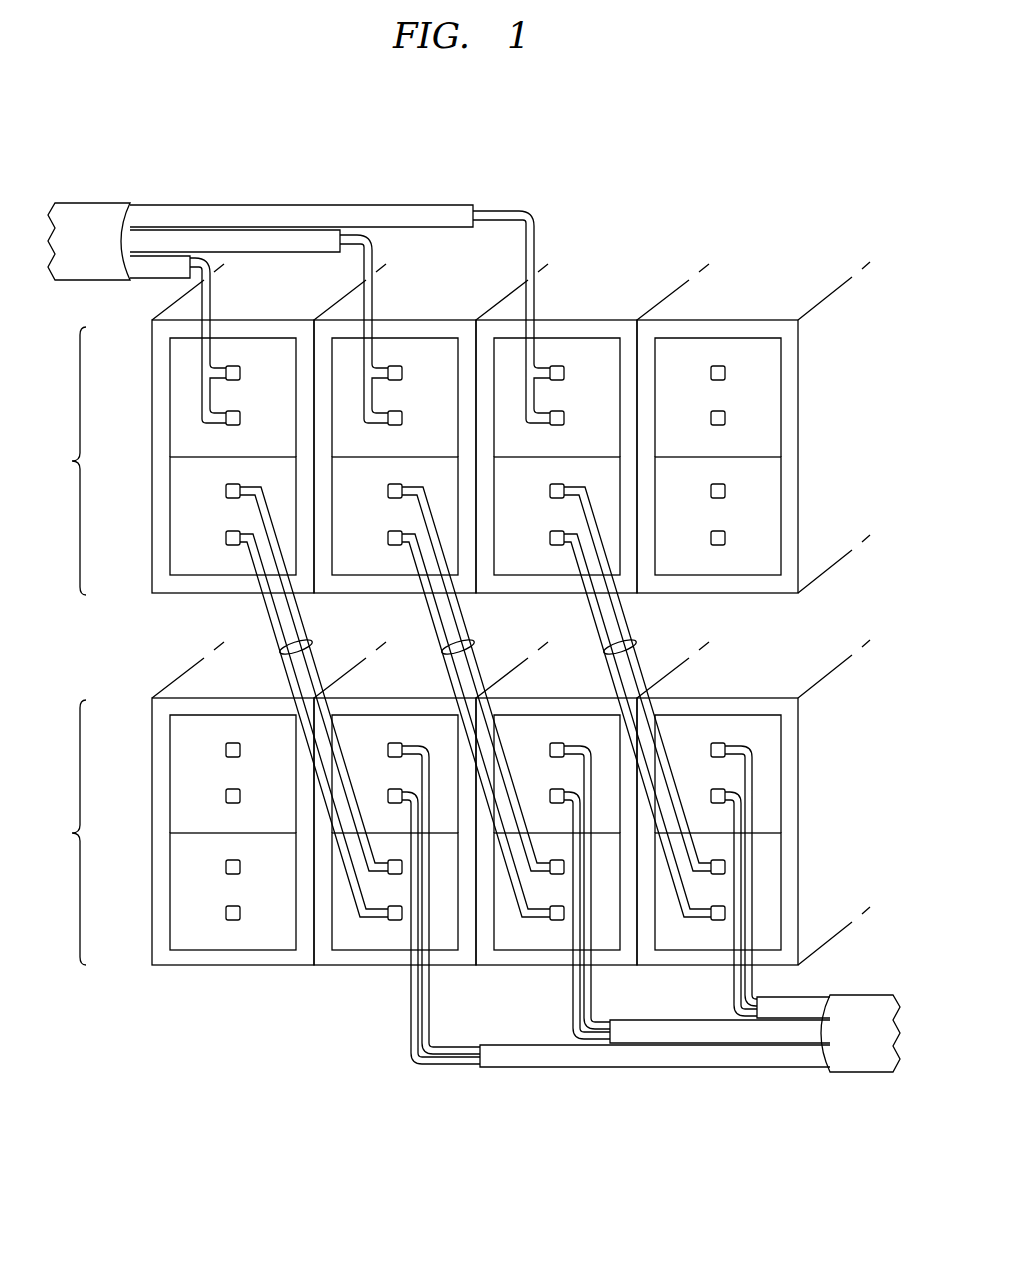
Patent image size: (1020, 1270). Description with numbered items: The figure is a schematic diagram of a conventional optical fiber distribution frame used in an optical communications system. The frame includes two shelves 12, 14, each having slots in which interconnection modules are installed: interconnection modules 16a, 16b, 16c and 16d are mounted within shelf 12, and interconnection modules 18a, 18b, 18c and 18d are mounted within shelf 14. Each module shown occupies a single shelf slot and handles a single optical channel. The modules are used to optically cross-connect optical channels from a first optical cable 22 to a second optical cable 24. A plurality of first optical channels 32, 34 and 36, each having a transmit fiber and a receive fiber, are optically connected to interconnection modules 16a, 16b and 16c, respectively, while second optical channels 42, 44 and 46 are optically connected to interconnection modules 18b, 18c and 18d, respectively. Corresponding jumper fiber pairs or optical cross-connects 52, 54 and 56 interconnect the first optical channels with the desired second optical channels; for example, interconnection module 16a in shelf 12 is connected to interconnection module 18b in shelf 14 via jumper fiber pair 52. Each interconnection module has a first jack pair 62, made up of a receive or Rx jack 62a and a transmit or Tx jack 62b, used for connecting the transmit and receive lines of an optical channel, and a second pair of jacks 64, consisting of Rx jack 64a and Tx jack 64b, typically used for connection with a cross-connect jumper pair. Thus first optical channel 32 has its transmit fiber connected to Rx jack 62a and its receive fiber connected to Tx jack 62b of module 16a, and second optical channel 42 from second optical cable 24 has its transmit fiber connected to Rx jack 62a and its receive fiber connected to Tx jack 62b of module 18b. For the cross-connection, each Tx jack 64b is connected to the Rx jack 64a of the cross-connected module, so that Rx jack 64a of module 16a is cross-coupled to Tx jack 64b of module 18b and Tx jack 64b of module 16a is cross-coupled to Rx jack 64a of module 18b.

The shelf 12 is at (455, 428).
The shelf 14 is at (455, 802).
The interconnection module 16a is at (157, 348).
The interconnection module 16b is at (457, 328).
The interconnection module 16c is at (617, 328).
The interconnection module 16d is at (779, 328).
The interconnection module 18a is at (211, 698).
The interconnection module 18b is at (373, 698).
The interconnection module 18c is at (535, 698).
The interconnection module 18d is at (712, 702).
The first optical cable 22 is at (95, 212).
The second optical cable 24 is at (858, 1063).
The first optical channel 32 is at (162, 270).
The first optical channel 34 is at (278, 240).
The first optical channel 36 is at (398, 215).
The second optical channel 42 is at (515, 1068).
The second optical channel 44 is at (646, 1025).
The second optical channel 46 is at (785, 1003).
The jumper fiber pair 52 is at (312, 645).
The jumper fiber pair 54 is at (473, 645).
The jumper fiber pair 56 is at (633, 645).
The first jack pair 62 is at (278, 345).
The Rx jack 62a is at (233, 366).
The Tx jack 62b is at (228, 423).
The second pair of jacks 64 is at (215, 570).
The Rx jack 64a is at (228, 497).
The Tx jack 64b is at (228, 544).